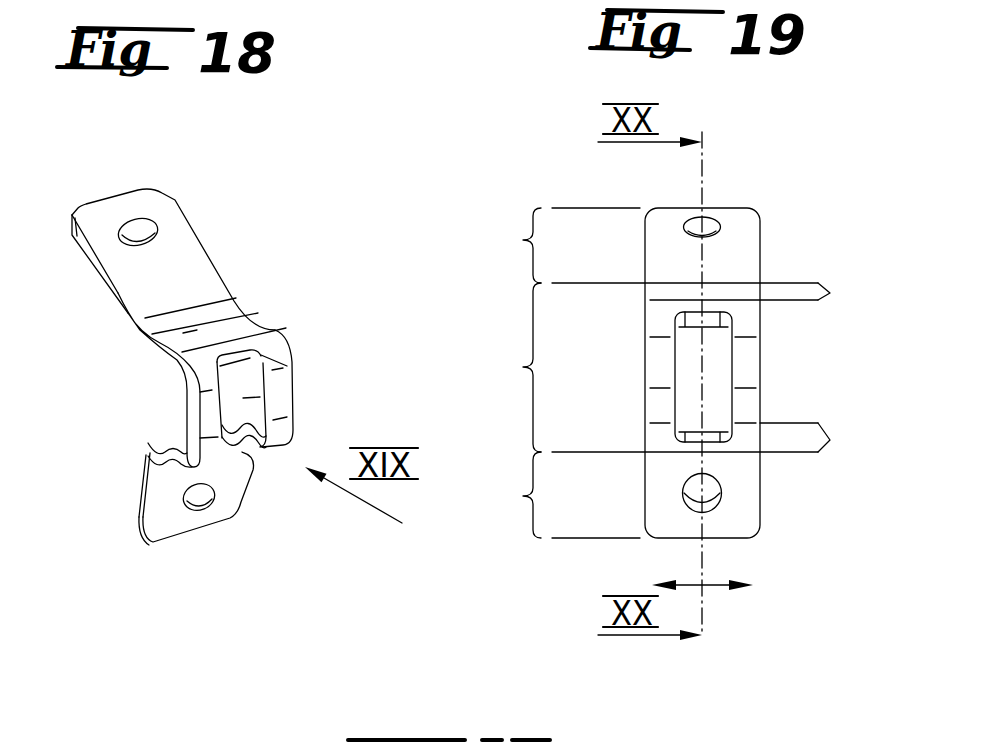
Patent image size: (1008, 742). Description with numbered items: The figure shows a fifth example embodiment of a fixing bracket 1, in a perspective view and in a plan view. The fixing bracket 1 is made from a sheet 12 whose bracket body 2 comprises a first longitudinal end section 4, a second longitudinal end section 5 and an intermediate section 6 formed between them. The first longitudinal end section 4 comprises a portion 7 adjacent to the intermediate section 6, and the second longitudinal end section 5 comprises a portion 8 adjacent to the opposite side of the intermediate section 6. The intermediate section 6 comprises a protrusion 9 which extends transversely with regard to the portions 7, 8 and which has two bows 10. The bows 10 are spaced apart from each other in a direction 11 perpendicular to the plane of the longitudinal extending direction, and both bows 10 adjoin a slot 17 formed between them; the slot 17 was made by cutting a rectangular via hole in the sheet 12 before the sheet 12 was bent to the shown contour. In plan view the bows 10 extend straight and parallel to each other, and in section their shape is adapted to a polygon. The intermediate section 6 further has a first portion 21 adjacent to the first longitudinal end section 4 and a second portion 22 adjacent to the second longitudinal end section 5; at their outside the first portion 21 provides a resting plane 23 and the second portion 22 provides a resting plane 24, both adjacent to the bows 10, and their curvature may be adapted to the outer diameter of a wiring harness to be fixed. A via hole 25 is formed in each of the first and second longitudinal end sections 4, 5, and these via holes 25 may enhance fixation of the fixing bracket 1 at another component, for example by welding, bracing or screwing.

In FIG. 18, the fixing bracket 1 is at (237, 200).
In FIG. 18, the bracket body 2 is at (155, 212).
In FIG. 19, the bracket body 2 is at (743, 225).
In FIG. 19, the first longitudinal end section 4 is at (523, 240).
In FIG. 19, the second longitudinal end section 5 is at (523, 496).
In FIG. 19, the intermediate section 6 is at (523, 367).
In FIG. 18, the portion 7 is at (205, 290).
In FIG. 19, the portion 7 is at (658, 278).
In FIG. 18, the portion 8 is at (180, 473).
In FIG. 19, the portion 8 is at (693, 460).
In FIG. 18, the protrusion 9 is at (282, 377).
In FIG. 19, the protrusion 9 is at (660, 343).
In FIG. 18, the bows 10 is at (273, 378).
In FIG. 19, the bows 10 is at (660, 327).
In FIG. 19, the direction 11 is at (703, 588).
In FIG. 18, the sheet 12 is at (240, 473).
In FIG. 19, the sheet 12 is at (738, 466).
In FIG. 18, the slot 17 is at (250, 400).
In FIG. 19, the slot 17 is at (688, 355).
In FIG. 19, the first portion 21 is at (830, 293).
In FIG. 19, the second portion 22 is at (830, 440).
In FIG. 18, the resting plane 23 is at (147, 328).
In FIG. 19, the resting plane 23 is at (725, 297).
In FIG. 18, the resting plane 24 is at (165, 453).
In FIG. 19, the resting plane 24 is at (663, 457).
In FIG. 18, the via hole 25 is at (129, 223).
In FIG. 19, the via hole 25 is at (707, 227).